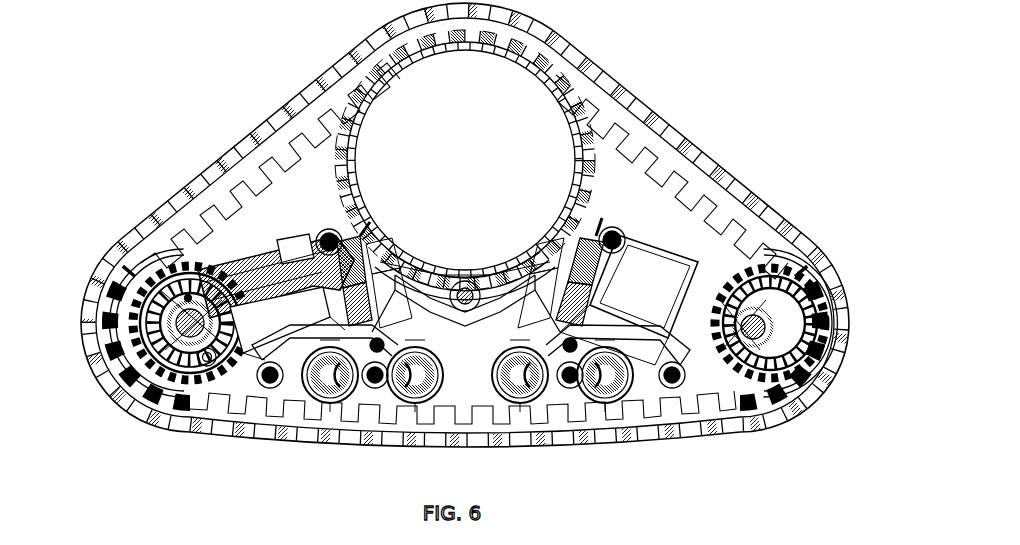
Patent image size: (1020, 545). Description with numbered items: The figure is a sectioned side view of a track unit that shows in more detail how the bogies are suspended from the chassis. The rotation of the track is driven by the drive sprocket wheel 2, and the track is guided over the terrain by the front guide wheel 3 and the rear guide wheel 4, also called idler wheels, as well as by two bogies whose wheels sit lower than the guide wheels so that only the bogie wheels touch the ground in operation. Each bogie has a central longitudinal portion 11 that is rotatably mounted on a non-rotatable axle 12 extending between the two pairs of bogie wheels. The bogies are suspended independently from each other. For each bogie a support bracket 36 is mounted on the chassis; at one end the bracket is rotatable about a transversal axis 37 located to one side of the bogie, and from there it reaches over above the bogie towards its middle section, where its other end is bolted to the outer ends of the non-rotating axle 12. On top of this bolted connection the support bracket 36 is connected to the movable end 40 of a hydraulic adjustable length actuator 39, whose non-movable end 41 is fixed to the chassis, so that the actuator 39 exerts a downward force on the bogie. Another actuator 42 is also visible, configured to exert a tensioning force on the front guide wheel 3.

The drive sprocket wheel 2 is at (470, 121).
The front guide wheel 3 is at (143, 345).
The rear guide wheel 4 is at (818, 325).
The central longitudinal portion 11 is at (360, 372).
The non-rotatable axle 12 is at (377, 387).
The support bracket 36 is at (300, 347).
The transversal axis 37 is at (268, 385).
The hydraulic adjustable length actuator 39 is at (360, 238).
The movable end 40 is at (362, 282).
The non-movable end 41 is at (331, 232).
The actuator 42 is at (263, 255).